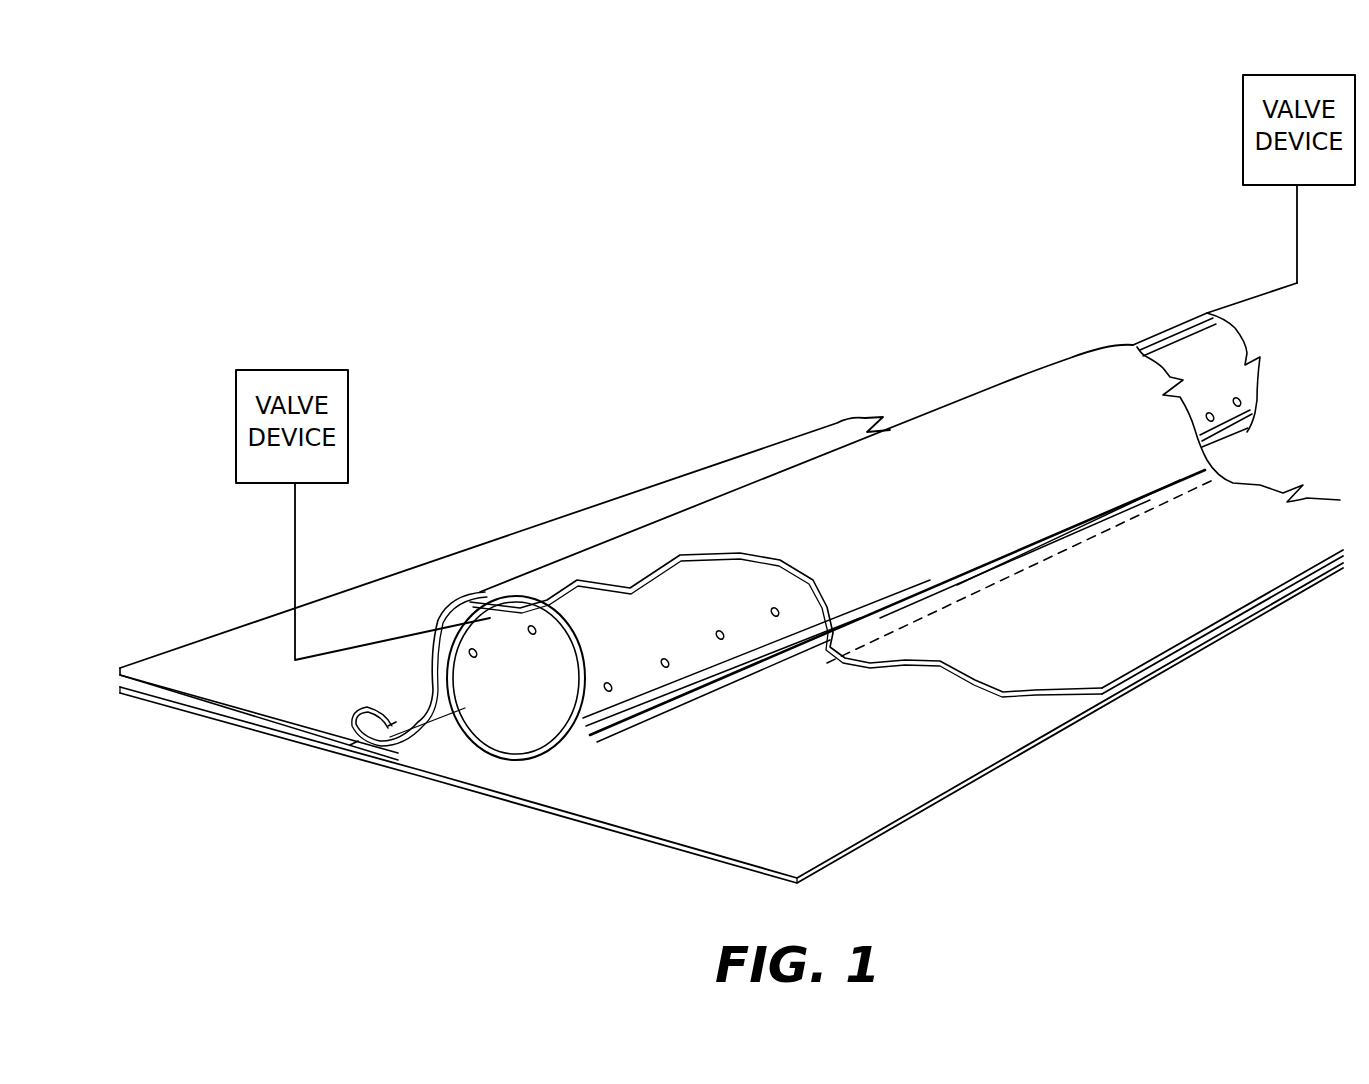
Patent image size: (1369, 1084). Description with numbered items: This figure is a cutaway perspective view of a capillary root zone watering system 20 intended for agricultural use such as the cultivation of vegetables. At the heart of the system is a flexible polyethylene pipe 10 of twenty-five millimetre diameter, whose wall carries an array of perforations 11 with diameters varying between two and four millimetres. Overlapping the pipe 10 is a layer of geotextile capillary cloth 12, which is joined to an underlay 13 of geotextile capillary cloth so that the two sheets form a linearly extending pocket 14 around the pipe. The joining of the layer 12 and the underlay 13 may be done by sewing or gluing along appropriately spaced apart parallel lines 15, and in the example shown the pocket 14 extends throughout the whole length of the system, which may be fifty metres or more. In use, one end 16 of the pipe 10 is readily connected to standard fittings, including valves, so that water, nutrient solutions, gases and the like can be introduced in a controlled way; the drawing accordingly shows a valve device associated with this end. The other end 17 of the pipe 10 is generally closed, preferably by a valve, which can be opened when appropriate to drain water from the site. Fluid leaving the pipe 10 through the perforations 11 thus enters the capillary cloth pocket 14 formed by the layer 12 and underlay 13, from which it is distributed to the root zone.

The flexible polyethylene pipe 10 is at (523, 747).
The perforations 11 is at (535, 634).
The layer of geotextile capillary cloth 12 is at (1147, 637).
The underlay of geotextile capillary cloth 13 is at (1008, 725).
The pocket 14 is at (435, 742).
The parallel lines 15 is at (382, 713).
The one end of the pipe 16 is at (1243, 333).
The other end of the pipe 17 is at (552, 760).
The watering system 20 is at (538, 480).